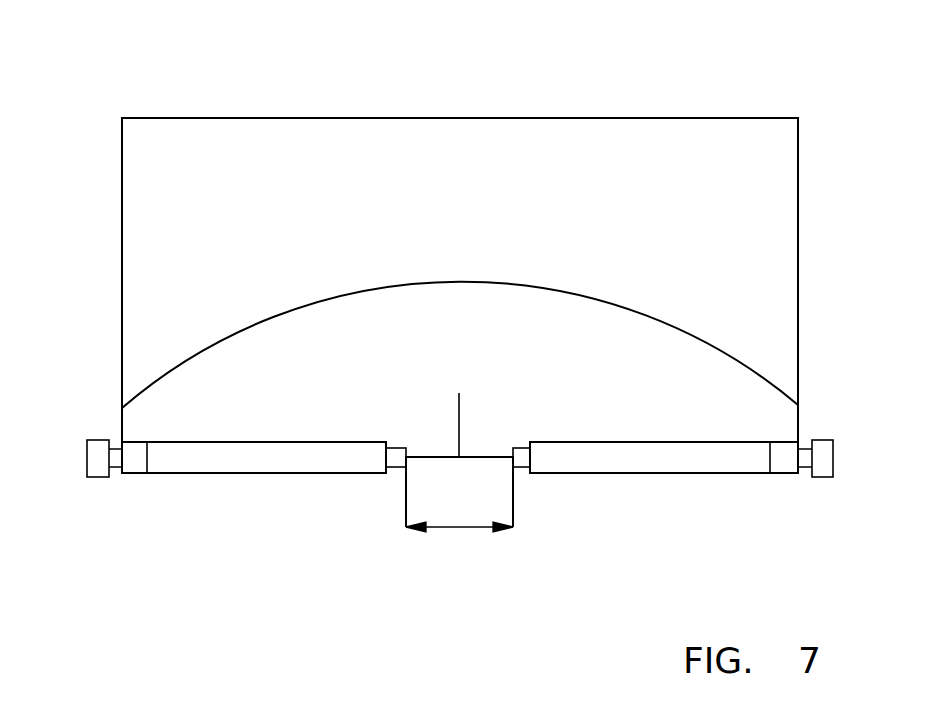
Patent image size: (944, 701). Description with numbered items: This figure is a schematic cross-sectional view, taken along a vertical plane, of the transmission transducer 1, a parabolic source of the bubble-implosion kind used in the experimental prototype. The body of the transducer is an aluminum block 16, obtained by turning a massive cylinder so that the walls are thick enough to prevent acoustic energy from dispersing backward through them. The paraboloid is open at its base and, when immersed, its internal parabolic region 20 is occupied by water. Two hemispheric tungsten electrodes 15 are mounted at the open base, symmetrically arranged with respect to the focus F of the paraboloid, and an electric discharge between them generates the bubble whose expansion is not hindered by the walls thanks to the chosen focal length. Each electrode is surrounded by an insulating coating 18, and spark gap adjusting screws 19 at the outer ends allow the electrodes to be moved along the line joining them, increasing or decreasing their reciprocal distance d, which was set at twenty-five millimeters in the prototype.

The transmission transducer 1 is at (539, 117).
The aluminum block 16 is at (668, 224).
The internal parabolic region 20 is at (326, 369).
The insulating coating 18 is at (277, 473).
The tungsten electrodes 15 is at (398, 475).
The spark gap adjusting screws 19 is at (100, 477).
The focus F is at (459, 442).
The reciprocal distance d is at (459, 516).